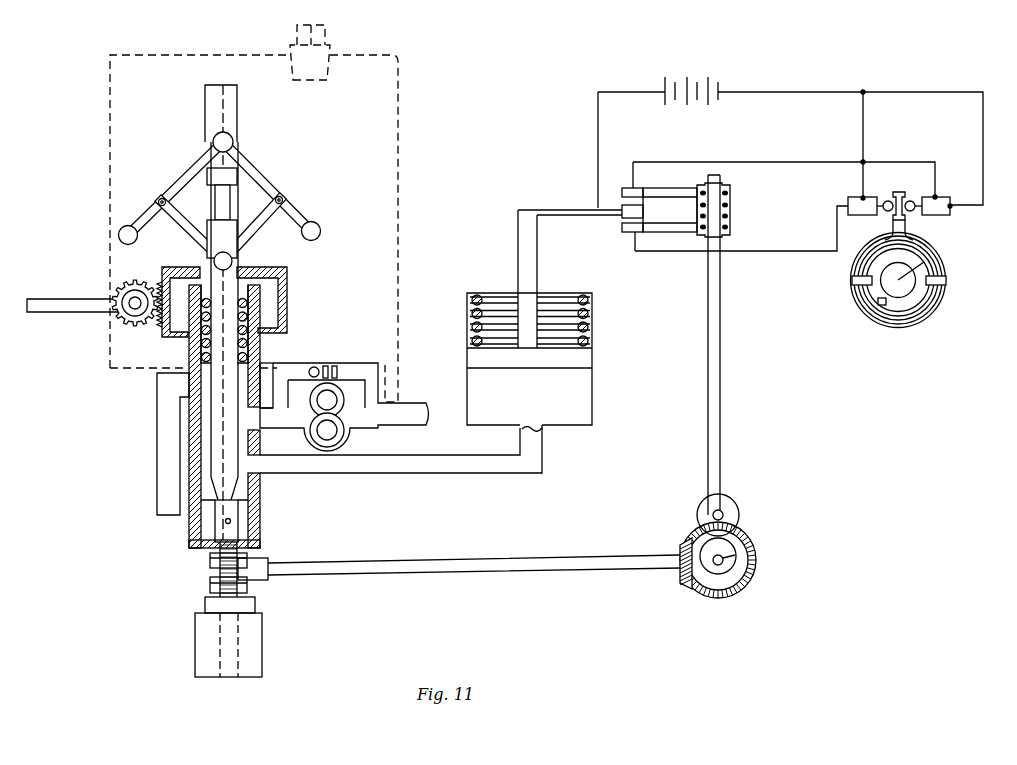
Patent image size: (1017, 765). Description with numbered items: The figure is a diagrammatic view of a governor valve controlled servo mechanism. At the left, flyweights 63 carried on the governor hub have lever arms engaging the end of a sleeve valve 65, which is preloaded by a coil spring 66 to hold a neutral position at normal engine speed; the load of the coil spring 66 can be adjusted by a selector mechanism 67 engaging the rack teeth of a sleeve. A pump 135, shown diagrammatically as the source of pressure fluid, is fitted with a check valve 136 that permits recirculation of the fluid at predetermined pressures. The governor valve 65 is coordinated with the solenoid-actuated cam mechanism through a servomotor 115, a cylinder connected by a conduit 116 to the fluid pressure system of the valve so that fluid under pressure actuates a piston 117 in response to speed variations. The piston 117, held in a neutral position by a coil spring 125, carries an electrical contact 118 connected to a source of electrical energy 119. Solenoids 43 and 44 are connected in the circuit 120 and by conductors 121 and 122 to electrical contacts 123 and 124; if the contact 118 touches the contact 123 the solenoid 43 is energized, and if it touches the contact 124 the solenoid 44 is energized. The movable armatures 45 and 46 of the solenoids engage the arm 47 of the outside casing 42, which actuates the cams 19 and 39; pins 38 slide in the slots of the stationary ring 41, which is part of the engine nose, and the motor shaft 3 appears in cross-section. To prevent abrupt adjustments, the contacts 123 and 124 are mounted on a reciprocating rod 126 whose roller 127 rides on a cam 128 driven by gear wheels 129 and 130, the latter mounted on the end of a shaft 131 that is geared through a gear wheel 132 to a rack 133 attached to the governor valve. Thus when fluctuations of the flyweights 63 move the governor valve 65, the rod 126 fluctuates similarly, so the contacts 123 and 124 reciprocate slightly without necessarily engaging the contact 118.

The flyweights 63 is at (319, 227).
The selector mechanism 67 is at (124, 325).
The coil spring 66 is at (262, 344).
The sleeve valve 65 is at (208, 444).
The pump 135 is at (366, 432).
The check valve 136 is at (318, 367).
The conduit 116 is at (474, 470).
The servomotor 115 is at (594, 376).
The piston 117 is at (524, 370).
The coil spring 125 is at (592, 327).
The electrical contact 118 is at (573, 214).
The electrical contact 123 is at (633, 187).
The electrical contact 124 is at (628, 233).
The source of electrical energy 119 is at (714, 77).
The circuit 120 is at (918, 90).
The conductor 121 is at (783, 162).
The conductor 122 is at (770, 251).
The solenoid 44 is at (862, 216).
The solenoid 43 is at (944, 216).
The movable armature 46 is at (884, 200).
The movable armature 45 is at (915, 199).
The arm 47 is at (906, 220).
The cam 19 is at (890, 327).
The outside casing 42 is at (940, 308).
The stationary ring 41 is at (910, 318).
The motor shaft 3 is at (936, 264).
The pins 38 is at (948, 281).
The cam 39 is at (880, 304).
The reciprocating rod 126 is at (726, 445).
The roller 127 is at (743, 515).
The cam 128 is at (751, 547).
The gear wheel 129 is at (700, 596).
The gear wheel 130 is at (679, 578).
The shaft 131 is at (403, 577).
The gear wheel 132 is at (210, 557).
The rack 133 is at (210, 582).